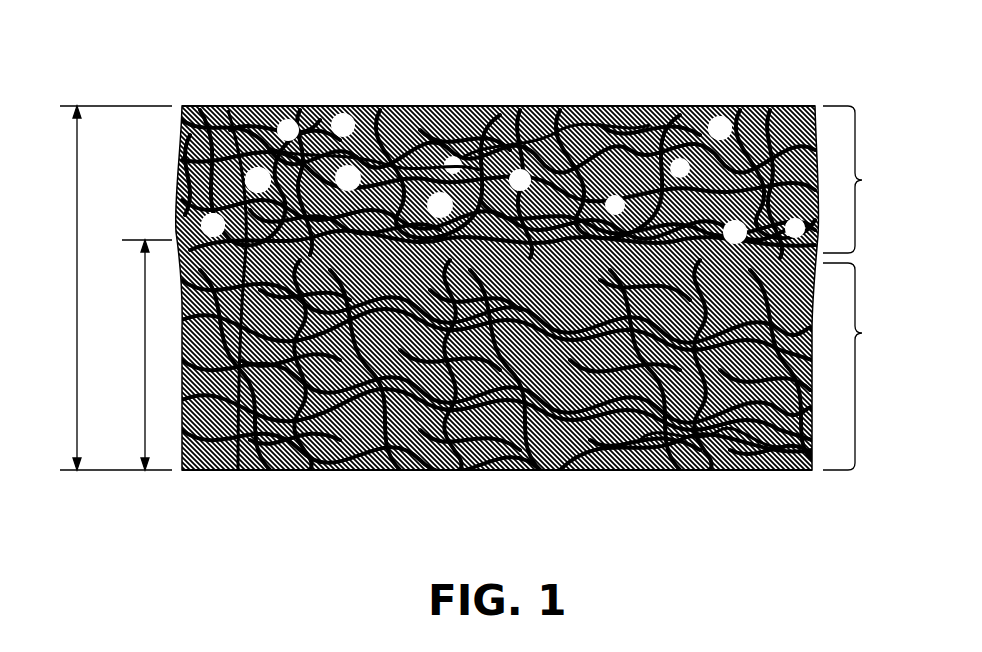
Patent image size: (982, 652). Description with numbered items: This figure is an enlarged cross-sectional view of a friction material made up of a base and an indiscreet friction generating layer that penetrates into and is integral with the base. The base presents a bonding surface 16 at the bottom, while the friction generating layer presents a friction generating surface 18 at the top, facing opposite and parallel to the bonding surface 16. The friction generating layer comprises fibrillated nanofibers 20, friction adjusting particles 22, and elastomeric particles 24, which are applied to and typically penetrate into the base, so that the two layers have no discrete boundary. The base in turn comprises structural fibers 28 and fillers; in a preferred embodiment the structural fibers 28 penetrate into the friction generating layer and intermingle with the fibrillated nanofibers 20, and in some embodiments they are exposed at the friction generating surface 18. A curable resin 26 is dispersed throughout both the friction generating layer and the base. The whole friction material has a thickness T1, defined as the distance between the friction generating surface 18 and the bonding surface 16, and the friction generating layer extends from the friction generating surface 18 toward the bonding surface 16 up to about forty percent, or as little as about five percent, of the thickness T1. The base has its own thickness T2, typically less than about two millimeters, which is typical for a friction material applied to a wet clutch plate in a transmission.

The bonding surface 16 is at (565, 472).
The friction generating surface 18 is at (690, 106).
The fibrillated nanofibers 20 is at (462, 158).
The friction adjusting particles 22 is at (388, 165).
The elastomeric particles 24 is at (255, 180).
The curable resin 26 is at (228, 110).
The structural fibers 28 is at (665, 435).
The thickness of the friction material T1 is at (116, 288).
The thickness of the base T2 is at (147, 355).